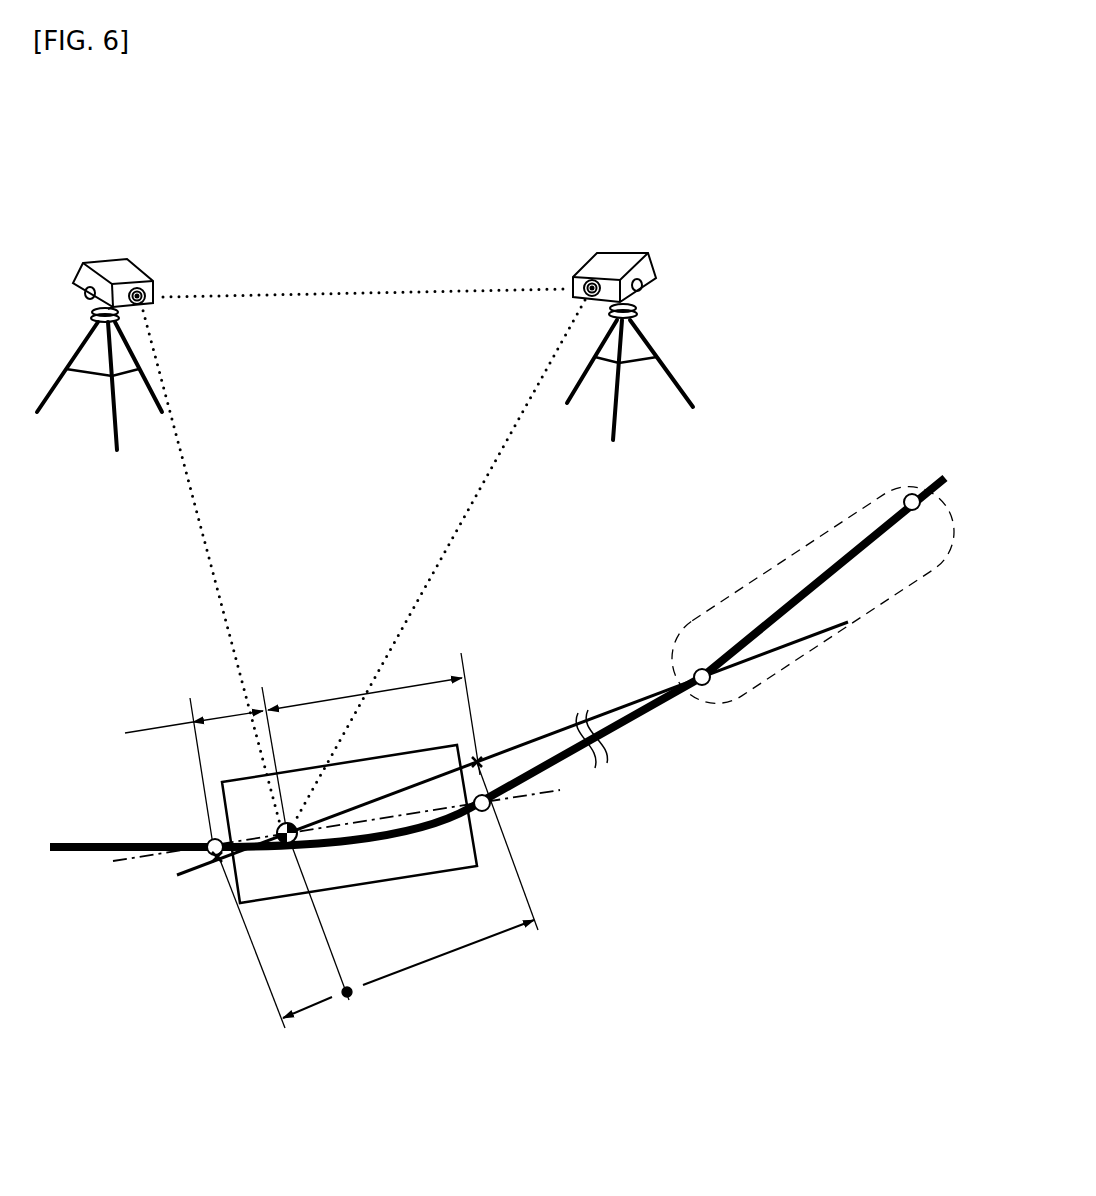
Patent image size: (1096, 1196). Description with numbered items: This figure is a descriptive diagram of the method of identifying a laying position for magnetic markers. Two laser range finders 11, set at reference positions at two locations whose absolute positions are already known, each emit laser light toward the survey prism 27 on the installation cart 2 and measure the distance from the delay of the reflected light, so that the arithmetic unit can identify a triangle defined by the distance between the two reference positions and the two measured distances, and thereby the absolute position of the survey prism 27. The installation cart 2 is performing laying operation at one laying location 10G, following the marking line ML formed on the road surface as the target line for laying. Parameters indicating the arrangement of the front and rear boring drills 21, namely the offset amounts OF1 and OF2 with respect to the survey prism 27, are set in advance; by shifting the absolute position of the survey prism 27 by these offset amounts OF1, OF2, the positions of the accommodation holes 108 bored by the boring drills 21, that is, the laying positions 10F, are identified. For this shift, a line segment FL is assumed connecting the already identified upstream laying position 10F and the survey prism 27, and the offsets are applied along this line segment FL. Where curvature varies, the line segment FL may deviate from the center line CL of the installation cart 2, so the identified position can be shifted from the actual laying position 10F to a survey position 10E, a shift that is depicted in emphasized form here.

The installation cart 2 is at (226, 911).
The laser range finder 11 is at (110, 276).
The boring drill 21 is at (208, 838).
The survey prism 27 is at (283, 826).
The survey position 10E is at (478, 758).
The laying position 10F is at (908, 495).
The laying location 10G is at (778, 533).
The accommodation hole 108 is at (475, 613).
The line segment FL is at (622, 705).
The marking line ML is at (633, 728).
The center line CL is at (132, 863).
The offset amount OF1 is at (238, 857).
The offset amount OF2 is at (403, 819).